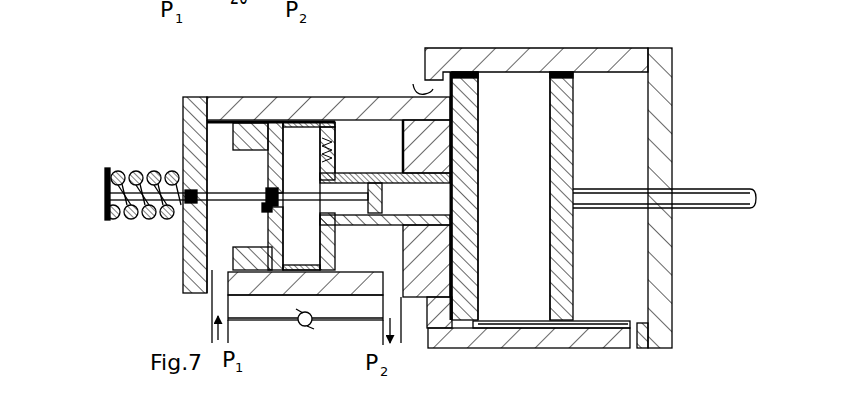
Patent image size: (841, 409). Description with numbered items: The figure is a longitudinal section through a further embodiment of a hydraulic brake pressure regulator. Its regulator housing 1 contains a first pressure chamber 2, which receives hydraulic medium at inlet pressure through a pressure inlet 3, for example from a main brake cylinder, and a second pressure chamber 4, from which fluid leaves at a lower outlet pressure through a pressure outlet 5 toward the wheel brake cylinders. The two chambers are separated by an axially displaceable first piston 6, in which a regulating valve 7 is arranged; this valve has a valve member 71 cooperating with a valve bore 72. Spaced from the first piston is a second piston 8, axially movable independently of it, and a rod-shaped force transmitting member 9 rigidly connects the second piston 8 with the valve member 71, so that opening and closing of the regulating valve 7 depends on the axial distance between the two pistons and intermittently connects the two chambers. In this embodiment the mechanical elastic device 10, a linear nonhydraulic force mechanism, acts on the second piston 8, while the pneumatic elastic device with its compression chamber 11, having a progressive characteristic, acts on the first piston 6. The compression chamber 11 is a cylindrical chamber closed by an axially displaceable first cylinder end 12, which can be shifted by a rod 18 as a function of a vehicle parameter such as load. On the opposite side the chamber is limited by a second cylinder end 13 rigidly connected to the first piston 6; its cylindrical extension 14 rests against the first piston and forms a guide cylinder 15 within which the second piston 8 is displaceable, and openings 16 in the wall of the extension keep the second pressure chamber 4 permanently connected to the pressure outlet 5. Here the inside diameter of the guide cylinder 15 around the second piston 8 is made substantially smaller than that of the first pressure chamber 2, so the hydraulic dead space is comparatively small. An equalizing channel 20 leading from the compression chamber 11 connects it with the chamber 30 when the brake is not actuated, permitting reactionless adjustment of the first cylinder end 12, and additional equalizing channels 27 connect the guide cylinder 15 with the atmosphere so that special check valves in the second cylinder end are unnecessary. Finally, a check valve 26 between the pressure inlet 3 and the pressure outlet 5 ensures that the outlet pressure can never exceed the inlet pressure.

The regulator housing 1 is at (218, 110).
The first pressure chamber 2 is at (217, 148).
The pressure inlet 3 is at (210, 292).
The second pressure chamber 4 is at (302, 140).
The pressure outlet 5 is at (393, 287).
The first piston 6 is at (233, 255).
The regulating valve 7 is at (257, 206).
The second piston 8 is at (358, 172).
The rod-shaped force transmitting member 9 is at (310, 165).
The mechanical elastic device 10 is at (118, 175).
The compression chamber of pneumatic elastic device 11 is at (508, 105).
The first cylinder end 12 is at (573, 72).
The second cylinder end 13 is at (454, 88).
The cylindrical extension 14 is at (297, 152).
The guide cylinder 15 is at (387, 172).
The openings 16 is at (340, 217).
The rod 18 is at (705, 198).
The equalizing channel 20 is at (548, 330).
The check valve 26 is at (311, 332).
The additional equalizing channels 27 is at (414, 85).
The chamber 30 is at (620, 285).
The valve member 71 is at (268, 196).
The valve bore 72 is at (283, 135).